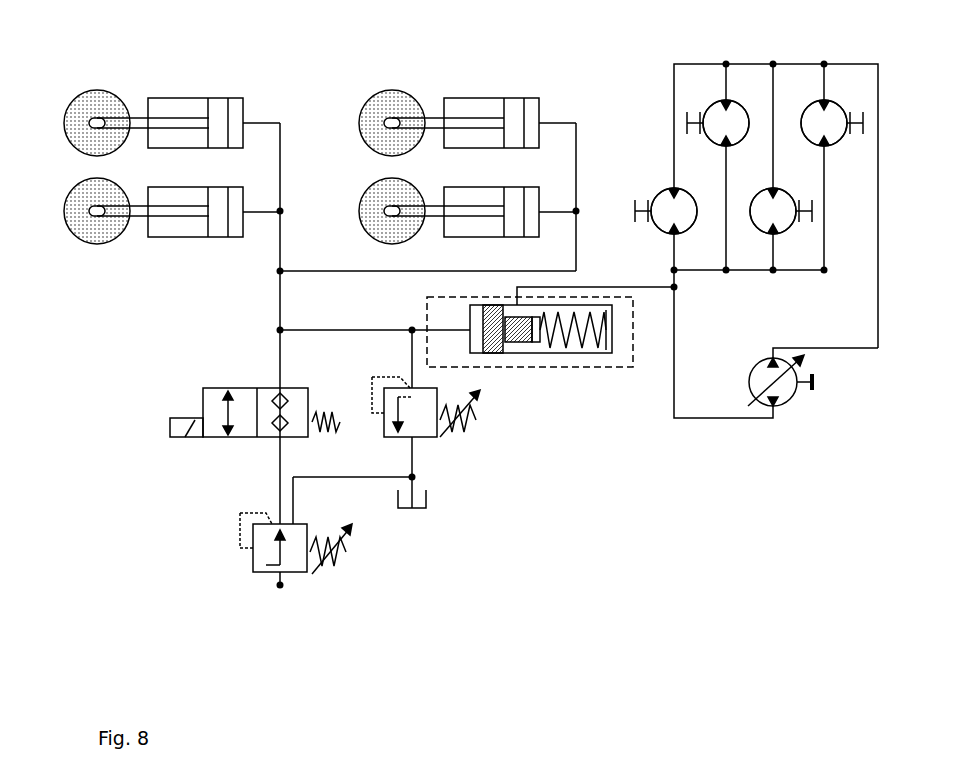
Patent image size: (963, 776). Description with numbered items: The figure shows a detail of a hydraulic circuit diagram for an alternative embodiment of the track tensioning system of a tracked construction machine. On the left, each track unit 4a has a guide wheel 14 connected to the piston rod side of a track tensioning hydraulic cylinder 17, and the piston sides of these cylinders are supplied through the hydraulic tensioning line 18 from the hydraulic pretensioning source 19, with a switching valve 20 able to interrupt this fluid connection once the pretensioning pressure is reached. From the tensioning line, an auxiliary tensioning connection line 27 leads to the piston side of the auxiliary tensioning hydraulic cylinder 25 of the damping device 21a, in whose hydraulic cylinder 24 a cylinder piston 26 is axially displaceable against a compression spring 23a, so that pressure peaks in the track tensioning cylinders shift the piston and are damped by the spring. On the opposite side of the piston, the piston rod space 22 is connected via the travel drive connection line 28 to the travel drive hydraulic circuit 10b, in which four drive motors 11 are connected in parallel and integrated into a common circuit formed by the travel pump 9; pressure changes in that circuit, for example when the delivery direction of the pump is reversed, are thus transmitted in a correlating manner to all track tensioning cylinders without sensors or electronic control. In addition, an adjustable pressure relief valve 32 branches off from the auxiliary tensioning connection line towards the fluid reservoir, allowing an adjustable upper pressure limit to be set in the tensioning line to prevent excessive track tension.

The track unit 4a is at (131, 90).
The guide wheel 14 is at (72, 108).
The track tensioning hydraulic cylinder 17 is at (178, 115).
The hydraulic tensioning line 18 is at (278, 258).
The auxiliary tensioning connection line 27 is at (383, 328).
The switching valve 20 is at (200, 392).
The adjustable pressure relief valve 32 is at (430, 420).
The hydraulic pretensioning source 19 is at (262, 574).
The damping device 21a is at (592, 392).
The cylinder piston 26 is at (492, 348).
The piston rod space 22 is at (514, 345).
The auxiliary tensioning hydraulic cylinder 25 is at (535, 352).
The compression spring 23a is at (565, 320).
The hydraulic cylinder 24 is at (607, 335).
The travel drive connection line 28 is at (652, 298).
The drive motor 11 is at (707, 115).
The travel drive hydraulic circuit 10b is at (708, 420).
The travel pump 9 is at (785, 393).